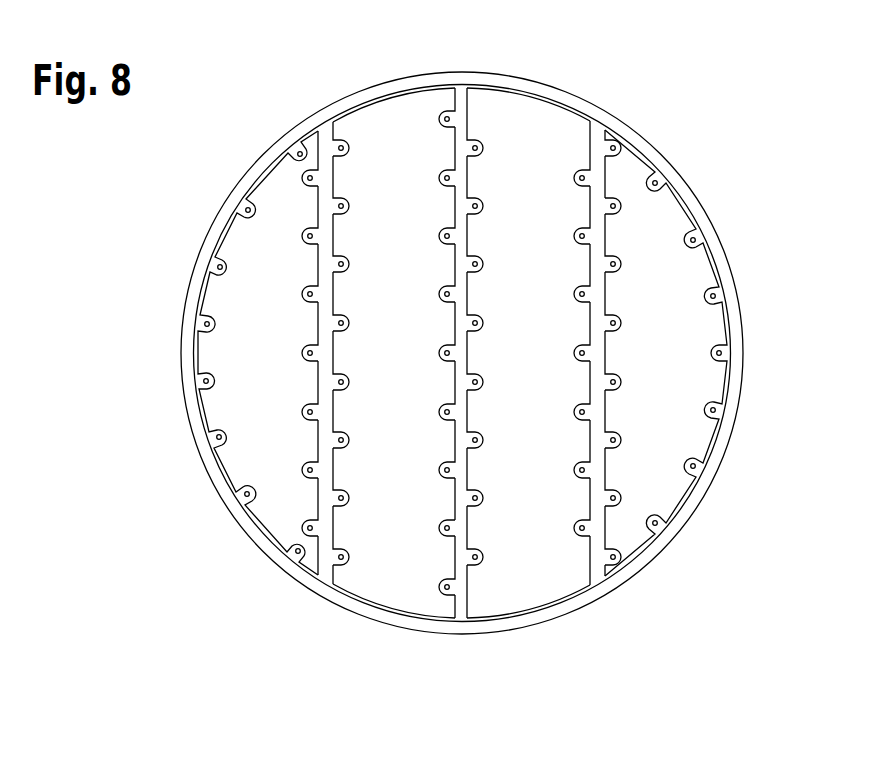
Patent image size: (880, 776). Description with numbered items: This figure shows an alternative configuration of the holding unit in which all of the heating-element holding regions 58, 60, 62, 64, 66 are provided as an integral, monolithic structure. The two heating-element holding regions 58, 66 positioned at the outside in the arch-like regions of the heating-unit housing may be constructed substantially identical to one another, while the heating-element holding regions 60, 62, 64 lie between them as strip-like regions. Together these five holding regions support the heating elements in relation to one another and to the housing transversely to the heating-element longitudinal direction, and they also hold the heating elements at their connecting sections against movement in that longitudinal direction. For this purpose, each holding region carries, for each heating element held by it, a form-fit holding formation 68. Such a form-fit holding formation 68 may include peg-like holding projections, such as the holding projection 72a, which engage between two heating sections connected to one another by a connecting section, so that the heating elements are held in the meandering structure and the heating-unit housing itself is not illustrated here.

The heating-element holding region 58 is at (242, 515).
The heating-element holding region 60 is at (326, 140).
The heating-element holding region 62 is at (462, 435).
The heating-element holding region 64 is at (598, 143).
The heating-element holding region 66 is at (730, 312).
The form-fit holding formation 68 is at (627, 214).
The holding projection 72a is at (443, 525).